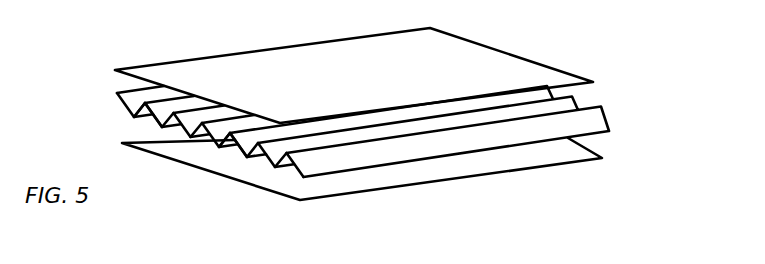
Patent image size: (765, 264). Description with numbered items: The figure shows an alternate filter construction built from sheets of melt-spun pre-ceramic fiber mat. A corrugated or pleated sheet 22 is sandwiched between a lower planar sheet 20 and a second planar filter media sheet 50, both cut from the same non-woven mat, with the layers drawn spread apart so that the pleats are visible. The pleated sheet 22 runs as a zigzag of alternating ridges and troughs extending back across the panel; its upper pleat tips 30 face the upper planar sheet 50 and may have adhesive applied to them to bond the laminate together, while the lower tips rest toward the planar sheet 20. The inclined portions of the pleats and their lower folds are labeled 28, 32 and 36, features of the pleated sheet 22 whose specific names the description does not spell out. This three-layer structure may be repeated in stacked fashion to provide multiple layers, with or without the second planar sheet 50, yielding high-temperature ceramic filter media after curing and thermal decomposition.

The second planar filter media sheet 50 is at (503, 57).
The planar sheet 20 is at (558, 155).
The corrugated or pleated sheet 22 is at (599, 110).
The inclined web 28 is at (188, 104).
The upper pleat tips 30 is at (142, 89).
The trough 32 is at (147, 116).
The inclined web 36 is at (228, 150).